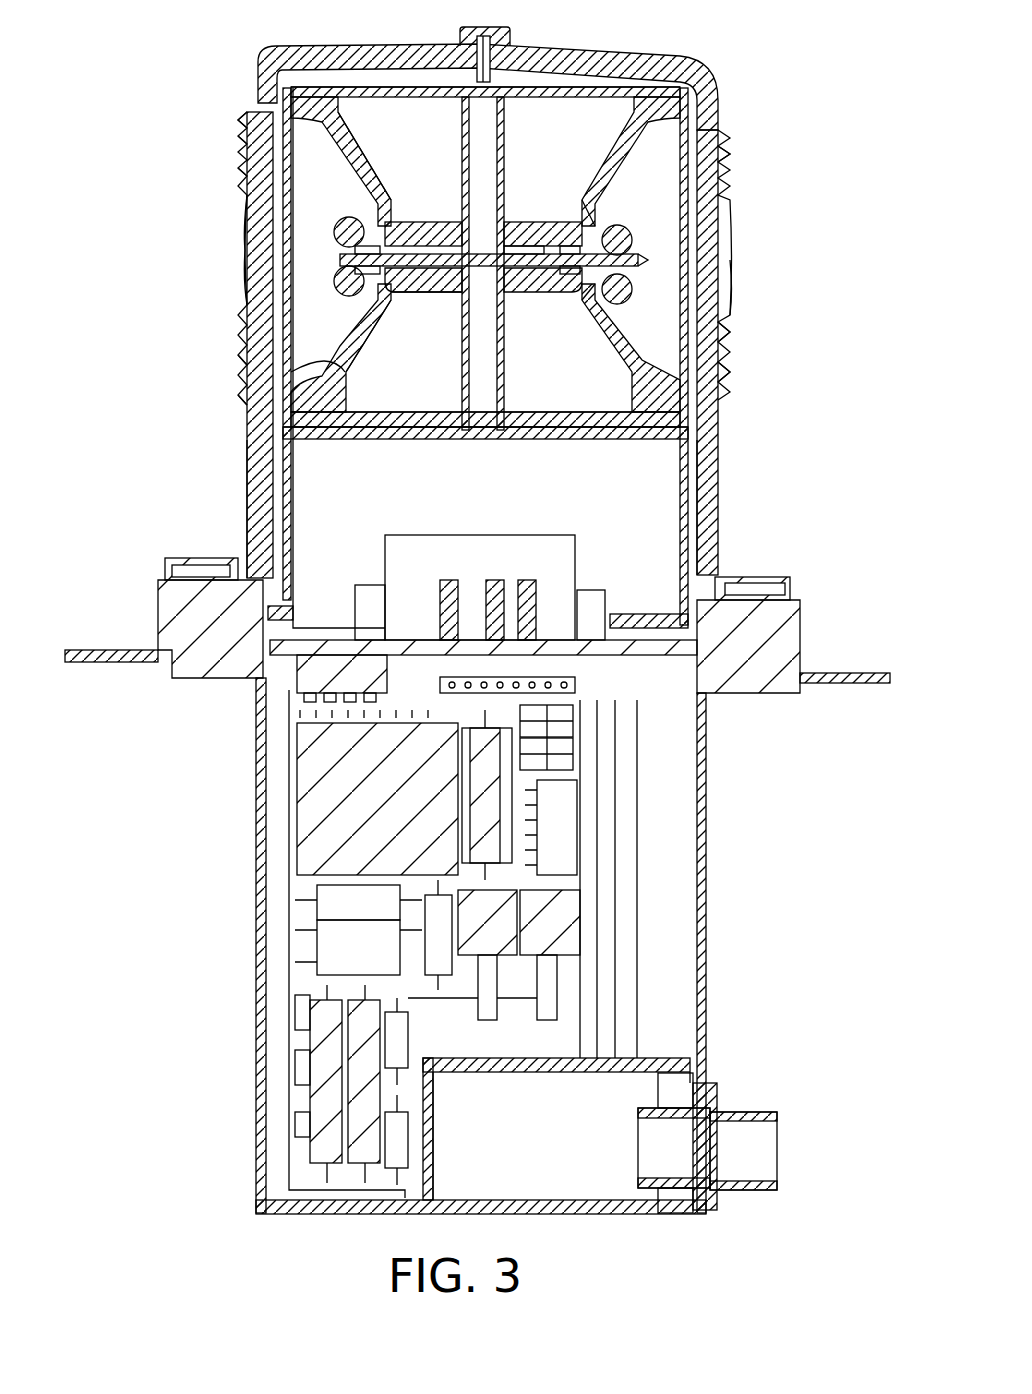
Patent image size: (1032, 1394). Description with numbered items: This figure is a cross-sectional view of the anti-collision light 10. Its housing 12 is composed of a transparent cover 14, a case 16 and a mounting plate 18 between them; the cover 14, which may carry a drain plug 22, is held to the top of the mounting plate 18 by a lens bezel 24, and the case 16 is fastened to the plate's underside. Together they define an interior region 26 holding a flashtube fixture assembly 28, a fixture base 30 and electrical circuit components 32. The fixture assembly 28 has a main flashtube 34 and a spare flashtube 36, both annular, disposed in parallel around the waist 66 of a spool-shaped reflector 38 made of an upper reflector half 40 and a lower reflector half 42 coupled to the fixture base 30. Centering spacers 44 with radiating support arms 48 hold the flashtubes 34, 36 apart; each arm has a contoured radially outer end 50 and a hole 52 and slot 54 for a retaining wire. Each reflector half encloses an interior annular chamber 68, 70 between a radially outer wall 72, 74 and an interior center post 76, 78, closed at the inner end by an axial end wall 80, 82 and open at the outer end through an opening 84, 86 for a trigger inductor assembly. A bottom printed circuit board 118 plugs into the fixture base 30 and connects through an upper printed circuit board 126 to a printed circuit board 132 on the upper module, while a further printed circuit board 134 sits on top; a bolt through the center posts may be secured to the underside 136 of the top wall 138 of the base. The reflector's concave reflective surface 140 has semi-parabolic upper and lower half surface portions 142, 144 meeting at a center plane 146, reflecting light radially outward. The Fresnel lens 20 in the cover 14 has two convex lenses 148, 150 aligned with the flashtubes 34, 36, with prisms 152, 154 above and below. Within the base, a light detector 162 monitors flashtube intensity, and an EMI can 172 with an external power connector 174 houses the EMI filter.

The anti-collision light 10 is at (215, 62).
The housing 12 is at (250, 480).
The cover 14 is at (716, 118).
The case 16 is at (706, 960).
The mounting plate 18 is at (800, 645).
The Fresnel lens 20 is at (722, 202).
The drain plug 22 is at (520, 45).
The lens bezel 24 is at (770, 578).
The interior region 26 is at (690, 540).
The flashtube fixture assembly 28 is at (720, 322).
The fixture base 30 is at (704, 475).
The electrical circuit components 32 is at (680, 868).
The main flashtube 34 is at (256, 236).
The spare flashtube 36 is at (276, 278).
The reflector 38 is at (335, 188).
The upper reflector half 40 is at (330, 170).
The lower reflector half 42 is at (325, 335).
The centering spacer 44 is at (566, 240).
The support arm 48 is at (585, 222).
The radially outer end 50 is at (646, 264).
The hole 52 is at (590, 215).
The slot 54 is at (612, 230).
The waist 66 is at (372, 236).
The interior annular chamber 68 is at (517, 132).
The interior annular chamber 70 is at (517, 414).
The radially outer wall 72 is at (640, 150).
The radially outer wall 74 is at (626, 375).
The interior center post 76 is at (466, 122).
The interior center post 78 is at (452, 372).
The axial end wall 80 is at (394, 212).
The axial end wall 82 is at (366, 304).
The opening 84 is at (348, 100).
The opening 86 is at (346, 428).
The bottom printed circuit board 118 is at (400, 424).
The upper printed circuit board 126 is at (436, 294).
The printed circuit board 132 is at (440, 228).
The printed circuit board 134 is at (362, 104).
The underside 136 is at (456, 436).
The top wall 138 is at (392, 436).
The reflective surface 140 is at (300, 122).
The upper half surface portion 142 is at (335, 135).
The lower half surface portion 144 is at (376, 306).
The center plane 146 is at (344, 258).
The convex lens 148 is at (722, 244).
The convex lens 150 is at (724, 292).
The prisms 152 is at (724, 158).
The prisms 154 is at (724, 372).
The light detector 162 is at (325, 628).
The EMI can 172 is at (630, 1062).
The external power connector 174 is at (755, 1106).